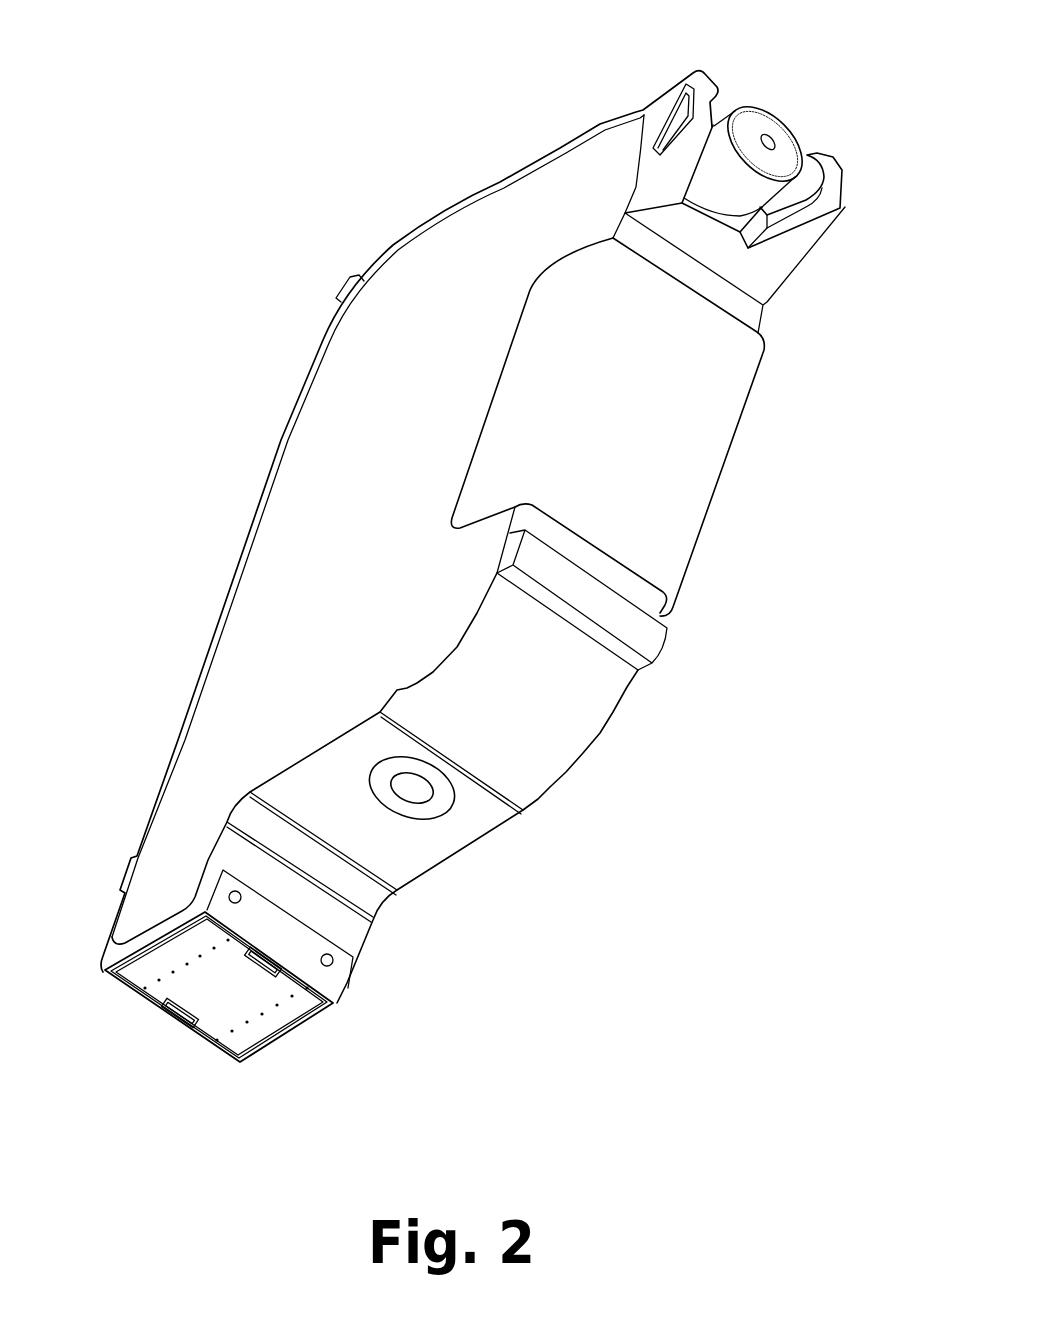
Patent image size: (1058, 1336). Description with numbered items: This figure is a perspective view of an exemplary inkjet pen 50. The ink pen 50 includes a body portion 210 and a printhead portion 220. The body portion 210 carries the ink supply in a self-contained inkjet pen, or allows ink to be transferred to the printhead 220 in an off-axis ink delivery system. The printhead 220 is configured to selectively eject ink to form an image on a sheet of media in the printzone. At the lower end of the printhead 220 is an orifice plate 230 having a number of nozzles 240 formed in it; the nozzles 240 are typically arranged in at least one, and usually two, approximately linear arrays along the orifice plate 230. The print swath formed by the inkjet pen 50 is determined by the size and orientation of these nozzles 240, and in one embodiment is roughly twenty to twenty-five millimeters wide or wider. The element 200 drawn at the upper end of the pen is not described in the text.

The mount assembly 50 is at (185, 121).
The pedestal / camera mount 200 is at (777, 147).
The frame 210 is at (235, 435).
The body / housing 220 is at (456, 919).
The bottom plate 230 is at (212, 1018).
The slots 240 is at (287, 997).